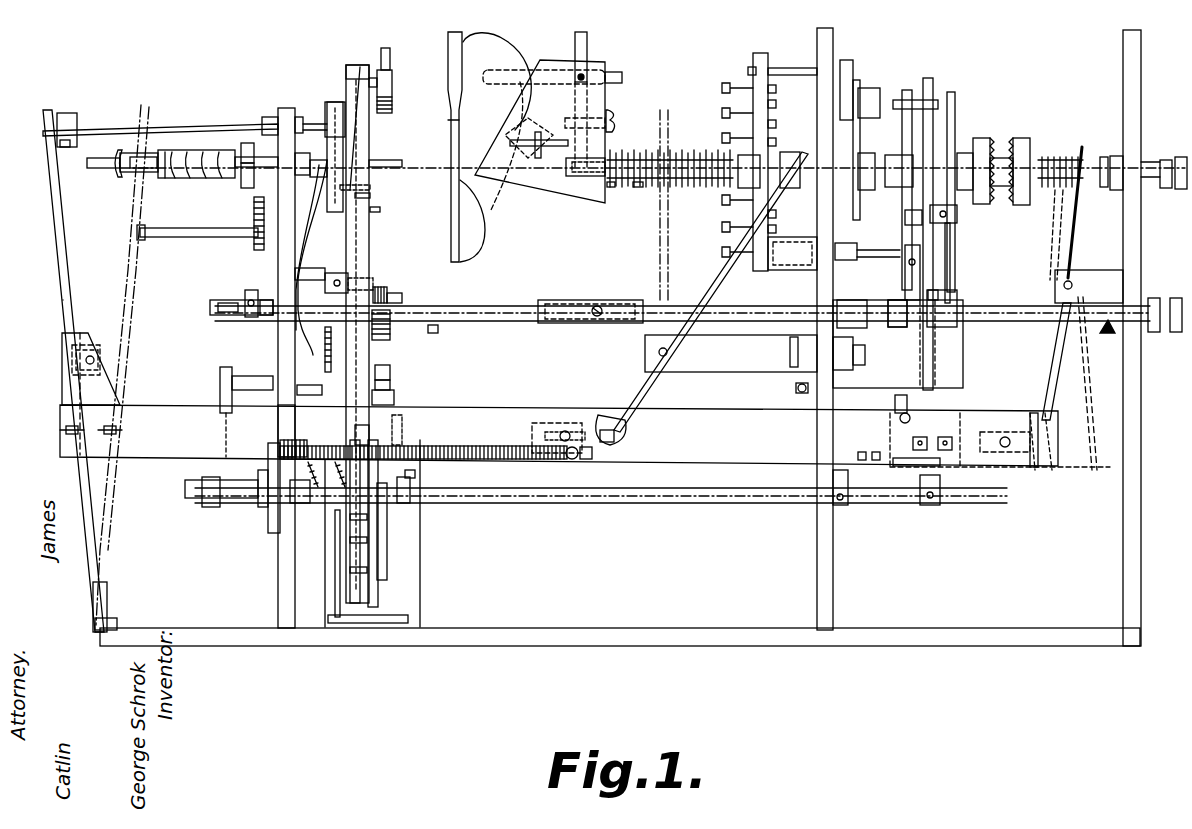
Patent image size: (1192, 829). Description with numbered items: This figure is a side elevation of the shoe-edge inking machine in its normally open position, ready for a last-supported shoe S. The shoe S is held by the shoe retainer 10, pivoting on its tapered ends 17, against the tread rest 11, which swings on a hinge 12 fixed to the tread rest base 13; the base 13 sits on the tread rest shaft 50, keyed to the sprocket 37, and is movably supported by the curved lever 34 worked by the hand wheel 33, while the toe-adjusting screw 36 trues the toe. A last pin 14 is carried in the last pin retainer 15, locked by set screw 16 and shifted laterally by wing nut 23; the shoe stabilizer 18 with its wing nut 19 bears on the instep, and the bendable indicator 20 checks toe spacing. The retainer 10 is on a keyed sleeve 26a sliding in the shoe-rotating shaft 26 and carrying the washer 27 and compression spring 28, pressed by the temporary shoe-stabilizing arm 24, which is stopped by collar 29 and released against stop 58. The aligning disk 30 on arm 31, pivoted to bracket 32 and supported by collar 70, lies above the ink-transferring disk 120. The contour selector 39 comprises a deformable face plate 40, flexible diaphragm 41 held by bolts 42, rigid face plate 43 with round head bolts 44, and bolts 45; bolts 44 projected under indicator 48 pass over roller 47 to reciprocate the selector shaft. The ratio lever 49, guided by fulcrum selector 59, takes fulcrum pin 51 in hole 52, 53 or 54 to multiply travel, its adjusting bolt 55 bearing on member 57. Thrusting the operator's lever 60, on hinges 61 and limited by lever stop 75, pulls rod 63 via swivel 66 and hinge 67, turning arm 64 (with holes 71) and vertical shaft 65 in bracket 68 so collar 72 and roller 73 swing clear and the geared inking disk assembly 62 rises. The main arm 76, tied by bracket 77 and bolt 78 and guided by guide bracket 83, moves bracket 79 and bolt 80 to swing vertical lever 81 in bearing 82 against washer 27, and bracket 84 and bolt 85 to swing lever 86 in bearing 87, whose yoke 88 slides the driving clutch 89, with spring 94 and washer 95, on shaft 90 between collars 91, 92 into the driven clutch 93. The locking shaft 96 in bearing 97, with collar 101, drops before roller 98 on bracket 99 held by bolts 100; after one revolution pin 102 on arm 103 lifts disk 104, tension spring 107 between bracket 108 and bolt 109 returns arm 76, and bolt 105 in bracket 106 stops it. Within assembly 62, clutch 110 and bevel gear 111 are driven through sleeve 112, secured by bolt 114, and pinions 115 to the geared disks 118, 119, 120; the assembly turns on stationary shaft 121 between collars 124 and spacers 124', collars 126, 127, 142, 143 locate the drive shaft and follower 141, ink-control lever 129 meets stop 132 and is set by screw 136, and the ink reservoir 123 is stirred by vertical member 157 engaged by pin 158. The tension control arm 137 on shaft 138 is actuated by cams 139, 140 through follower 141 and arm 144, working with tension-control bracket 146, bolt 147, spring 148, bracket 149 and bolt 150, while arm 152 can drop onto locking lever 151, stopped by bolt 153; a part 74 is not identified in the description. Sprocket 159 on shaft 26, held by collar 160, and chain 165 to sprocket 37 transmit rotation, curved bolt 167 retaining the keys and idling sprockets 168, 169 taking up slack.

The shoe retainer 10 is at (545, 185).
The tread rest 11 is at (369, 150).
The hinge 12 is at (338, 103).
The tread rest base 13 is at (370, 188).
The last pin 14 is at (622, 76).
The last pin retainer 15 is at (587, 48).
The set screw 16 is at (578, 73).
The tapered ends 17 is at (451, 165).
The shoe stabilizer 18 is at (497, 182).
The wing nut 19 is at (540, 132).
The indicator 20 is at (375, 167).
The wing nut 23 is at (620, 114).
The shoe-stabilizing arm 24 is at (770, 58).
The shoe-rotating shaft 26 is at (700, 190).
The keyed sleeve 26a is at (625, 190).
The washer 27 is at (740, 185).
The compression spring 28 is at (645, 188).
The collar 29 is at (895, 300).
The disk 30 is at (386, 48).
The arm 31 is at (378, 70).
The bracket 32 is at (346, 68).
The hand wheel 33 is at (390, 340).
The curved lever 34 is at (295, 278).
The toe-adjusting screw 36 is at (372, 196).
The sprocket 37 is at (262, 117).
The contour selector 39 is at (745, 96).
The deformable face plate 40 is at (776, 124).
The flexible steel diaphragm 41 is at (776, 89).
The bolts 42 is at (776, 104).
The rigid steel face plate 43 is at (745, 118).
The round head bolts 44 is at (722, 138).
The bolts 45 is at (776, 142).
The roller 47 is at (778, 270).
The indicator 48 is at (748, 71).
The ratio lever 49 is at (135, 172).
The tread rest shaft 50 is at (198, 150).
The fulcrum pin 51 is at (170, 178).
The hole 52 is at (188, 178).
The hole 53 is at (204, 178).
The hole 54 is at (220, 178).
The adjusting bolt 55 is at (100, 168).
The member 57 is at (122, 152).
The stop 58 is at (792, 188).
The fulcrum selector 59 is at (160, 178).
The operator's lever 60 is at (128, 248).
The hinges 61 is at (115, 620).
The geared inking disk assembly 62 is at (396, 398).
The rod 63 is at (200, 125).
The arm 64 is at (313, 157).
The vertical shaft 65 is at (340, 240).
The swivel 66 is at (70, 115).
The hinge 67 is at (72, 143).
The adjustable bracket 68 is at (312, 255).
The collar 70 is at (327, 110).
The holes 71 is at (250, 157).
The collar 72 is at (348, 278).
The roller 73 is at (372, 285).
The rack 74 is at (420, 466).
The adjustable lever stop 75 is at (180, 237).
The main arm 76 is at (172, 422).
The adjustable bracket 77 is at (100, 362).
The bolt 78 is at (92, 348).
The adjustable bracket 79 is at (560, 423).
The bolt 80 is at (625, 420).
The vertical lever 81 is at (750, 260).
The bearing 82 is at (645, 355).
The guide bracket 83 is at (796, 388).
The adjustable bracket 84 is at (1030, 430).
The bolt 85 is at (1035, 418).
The vertical lever 86 is at (1052, 360).
The bearing 87 is at (1055, 295).
The yoke 88 is at (1104, 157).
The driving clutch 89 is at (1028, 140).
The shaft 90 is at (1000, 158).
The collar 91 is at (1165, 160).
The collar 92 is at (1115, 156).
The driven clutch 93 is at (985, 138).
The compression spring 94 is at (1060, 157).
The washer 95 is at (1082, 147).
The vertical locking shaft 96 is at (940, 268).
The bearing 97 is at (963, 360).
The roller 98 is at (898, 415).
The bracket 99 is at (955, 413).
The bolts 100 is at (975, 452).
The collar 101 is at (950, 295).
The pin 102 is at (905, 218).
The arm 103 is at (915, 160).
The disk 104 is at (957, 214).
The bolt 105 is at (848, 500).
The bracket 106 is at (865, 462).
The tension spring 107 is at (568, 459).
The bracket 108 is at (588, 459).
The bolt 109 is at (278, 433).
The rotatable clutch 110 is at (420, 283).
The bevel gear 111 is at (387, 290).
The sleeve 112 is at (525, 323).
The bolt 114 is at (598, 318).
The pinions 115 is at (668, 310).
The geared inking disk 118 is at (410, 515).
The regulator disk 119 is at (387, 535).
The ink-transferring disk 120 is at (378, 598).
The shaft 121 is at (230, 315).
The ink reservoir 123 is at (420, 565).
The collars 124 is at (234, 296).
The spacers or washers 124' is at (252, 319).
The collar 126 is at (1106, 335).
The collar 127 is at (850, 300).
The ink-control lever 129 is at (392, 388).
The adjustable stop 132 is at (381, 210).
The adjusting screw 136 is at (396, 445).
The tension control arm 137 is at (400, 378).
The shaft 138 is at (928, 505).
The cam 139 is at (950, 235).
The cam 140 is at (915, 100).
The follower 141 is at (935, 90).
The collar 142 is at (896, 327).
The collar 143 is at (957, 302).
The arm 144 is at (940, 470).
The tension-control bracket 146 is at (298, 503).
The bolt 147 is at (320, 490).
The spring 148 is at (300, 428).
The bracket 149 is at (312, 390).
The bolt 150 is at (325, 360).
The locking lever 151 is at (268, 520).
The arm 152 is at (245, 376).
The bolt 153 is at (258, 472).
The vertical member 157 is at (335, 555).
The pin 158 is at (345, 592).
The sprocket 159 is at (862, 145).
The collar 160 is at (850, 125).
The chain 165 is at (243, 188).
The curved bolt 167 is at (243, 163).
The idling sprocket 168 is at (873, 100).
The idling sprocket 169 is at (254, 235).
The shoe S is at (448, 62).